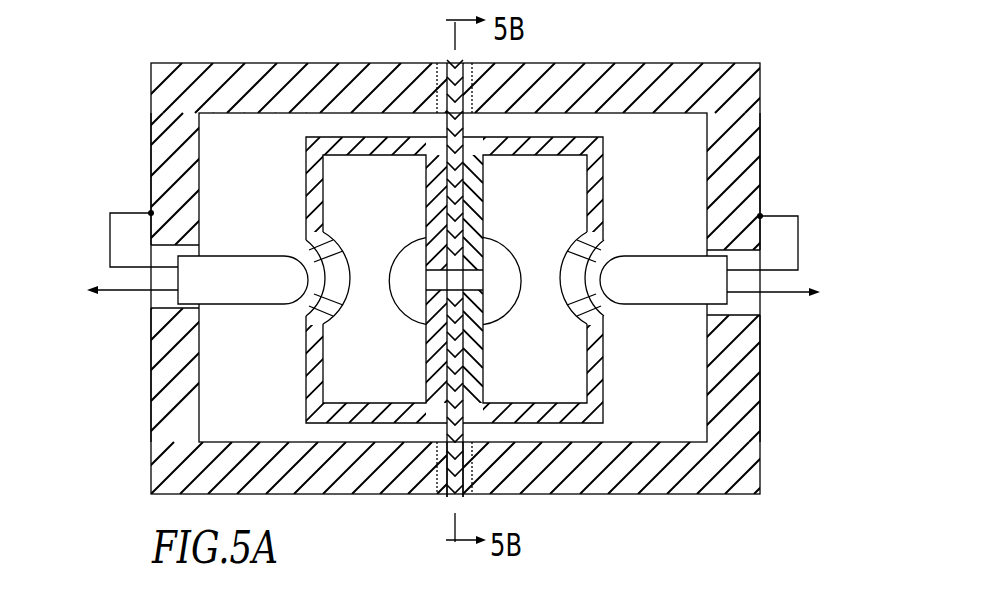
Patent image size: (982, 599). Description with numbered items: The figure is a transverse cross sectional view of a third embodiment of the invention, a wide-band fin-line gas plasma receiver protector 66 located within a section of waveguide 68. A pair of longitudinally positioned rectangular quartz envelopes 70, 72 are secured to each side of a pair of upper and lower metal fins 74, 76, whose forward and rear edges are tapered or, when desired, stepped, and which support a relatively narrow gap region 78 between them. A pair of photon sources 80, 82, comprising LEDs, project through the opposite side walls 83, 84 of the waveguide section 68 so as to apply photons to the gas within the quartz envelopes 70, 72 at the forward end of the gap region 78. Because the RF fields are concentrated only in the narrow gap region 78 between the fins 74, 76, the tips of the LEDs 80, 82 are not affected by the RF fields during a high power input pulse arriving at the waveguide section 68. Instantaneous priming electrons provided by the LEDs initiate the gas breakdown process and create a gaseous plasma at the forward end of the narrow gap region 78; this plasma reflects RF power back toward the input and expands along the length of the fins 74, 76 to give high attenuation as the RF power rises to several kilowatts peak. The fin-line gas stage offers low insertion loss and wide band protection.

The wide-band fin-line gas plasma receiver protector 66 is at (792, 67).
The section of waveguide 68 is at (233, 63).
The rectangular quartz envelope 70 is at (306, 178).
The rectangular quartz envelope 72 is at (603, 180).
The upper metal fin 74 is at (438, 80).
The lower metal fin 76 is at (437, 473).
The narrow gap region 78 is at (458, 285).
The photon source 80 is at (278, 288).
The photon source 82 is at (628, 292).
The side wall 83 is at (151, 132).
The side wall 84 is at (760, 137).